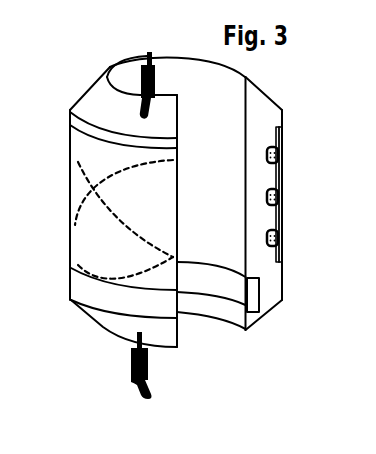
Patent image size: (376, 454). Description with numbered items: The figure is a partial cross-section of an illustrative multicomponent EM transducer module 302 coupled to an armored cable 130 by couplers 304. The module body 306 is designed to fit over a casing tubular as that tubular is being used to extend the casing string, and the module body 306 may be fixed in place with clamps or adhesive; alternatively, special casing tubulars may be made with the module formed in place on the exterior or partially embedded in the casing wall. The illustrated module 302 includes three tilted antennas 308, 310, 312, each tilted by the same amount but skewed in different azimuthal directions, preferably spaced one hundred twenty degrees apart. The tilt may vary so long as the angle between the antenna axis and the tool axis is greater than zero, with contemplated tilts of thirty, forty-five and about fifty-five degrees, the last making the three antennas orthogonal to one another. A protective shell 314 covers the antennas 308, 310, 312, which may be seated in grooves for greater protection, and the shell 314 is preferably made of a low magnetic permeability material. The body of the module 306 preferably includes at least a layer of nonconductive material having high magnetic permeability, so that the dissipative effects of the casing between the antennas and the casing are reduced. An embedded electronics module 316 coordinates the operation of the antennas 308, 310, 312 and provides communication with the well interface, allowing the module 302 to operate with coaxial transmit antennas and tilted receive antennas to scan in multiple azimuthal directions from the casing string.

The armored cable 130 is at (146, 55).
The EM transducer module 302 is at (101, 329).
The couplers 304 is at (157, 80).
The module body 306 is at (270, 118).
The tilted antenna 308 is at (280, 157).
The tilted antenna 310 is at (280, 195).
The tilted antenna 312 is at (280, 237).
The protective shell 314 is at (70, 165).
The embedded electronics module 316 is at (193, 259).